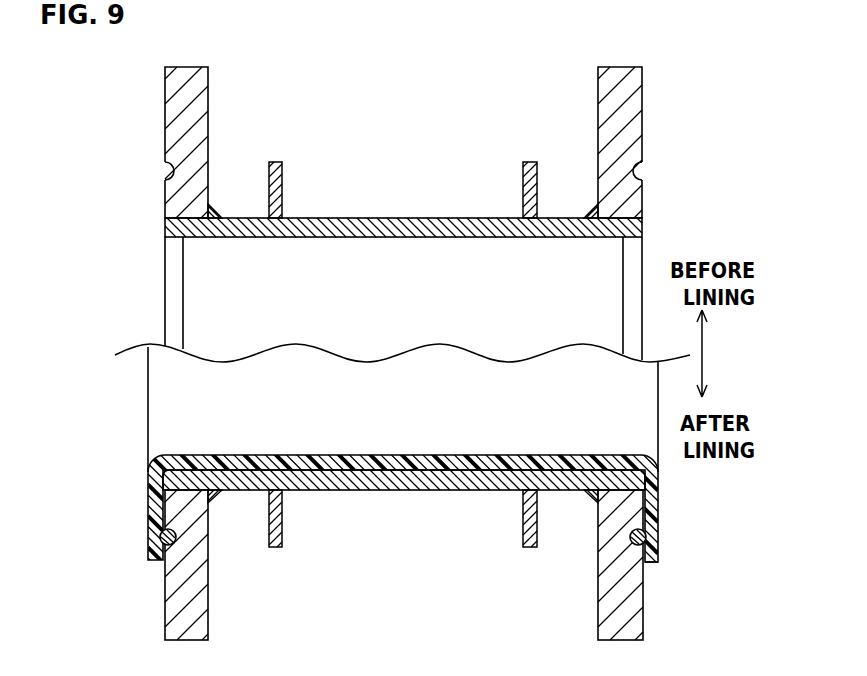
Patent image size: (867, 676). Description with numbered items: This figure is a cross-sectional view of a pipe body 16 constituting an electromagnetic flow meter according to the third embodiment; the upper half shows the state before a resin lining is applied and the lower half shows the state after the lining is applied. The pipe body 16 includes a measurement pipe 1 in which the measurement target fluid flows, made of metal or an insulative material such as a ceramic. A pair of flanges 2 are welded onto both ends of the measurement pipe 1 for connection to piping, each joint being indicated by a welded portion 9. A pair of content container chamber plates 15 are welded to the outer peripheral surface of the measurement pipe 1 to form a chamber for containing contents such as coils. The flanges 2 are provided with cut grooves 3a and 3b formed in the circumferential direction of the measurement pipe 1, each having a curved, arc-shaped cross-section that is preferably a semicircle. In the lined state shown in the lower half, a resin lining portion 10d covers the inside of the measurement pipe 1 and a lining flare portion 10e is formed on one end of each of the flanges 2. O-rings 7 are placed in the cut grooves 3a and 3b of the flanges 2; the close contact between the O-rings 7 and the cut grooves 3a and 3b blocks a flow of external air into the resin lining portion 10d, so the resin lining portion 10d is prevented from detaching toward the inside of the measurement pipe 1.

The measurement pipe 1 is at (398, 218).
The flange 2 is at (165, 86).
The cut groove 3a is at (643, 170).
The cut groove 3b is at (164, 170).
The O-ring 7 is at (160, 537).
The welded portion 9 is at (219, 206).
The resin lining portion 10d is at (352, 468).
The lining flare portion 10e is at (659, 500).
The content container chamber plate 15 is at (276, 161).
The pipe body 16 is at (432, 462).